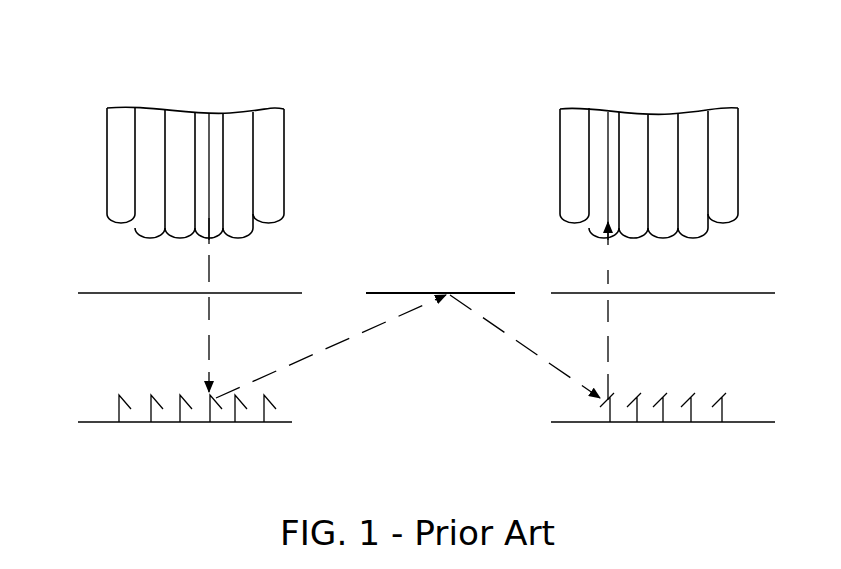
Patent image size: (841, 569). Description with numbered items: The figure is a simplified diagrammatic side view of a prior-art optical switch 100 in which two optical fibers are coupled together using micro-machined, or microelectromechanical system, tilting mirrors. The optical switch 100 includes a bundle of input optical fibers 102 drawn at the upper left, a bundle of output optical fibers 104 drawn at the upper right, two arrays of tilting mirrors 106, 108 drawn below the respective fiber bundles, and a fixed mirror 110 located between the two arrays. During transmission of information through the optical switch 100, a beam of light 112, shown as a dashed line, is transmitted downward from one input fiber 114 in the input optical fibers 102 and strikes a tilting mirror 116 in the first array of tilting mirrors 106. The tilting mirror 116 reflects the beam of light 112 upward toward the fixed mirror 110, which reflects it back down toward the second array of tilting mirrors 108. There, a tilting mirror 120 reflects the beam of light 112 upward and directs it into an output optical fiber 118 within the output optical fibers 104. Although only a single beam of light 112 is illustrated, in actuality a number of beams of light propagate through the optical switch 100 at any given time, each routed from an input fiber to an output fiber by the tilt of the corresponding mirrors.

The optical switch 100 is at (498, 70).
The input optical fibers 102 is at (237, 152).
The output optical fibers 104 is at (606, 152).
The array of tilting mirrors 106 is at (160, 388).
The array of tilting mirrors 108 is at (684, 387).
The fixed mirror 110 is at (505, 293).
The beam of light 112 is at (209, 313).
The input fiber 114 is at (209, 125).
The tilting mirror 116 is at (210, 399).
The output optical fiber 118 is at (607, 125).
The tilting mirror 120 is at (612, 398).